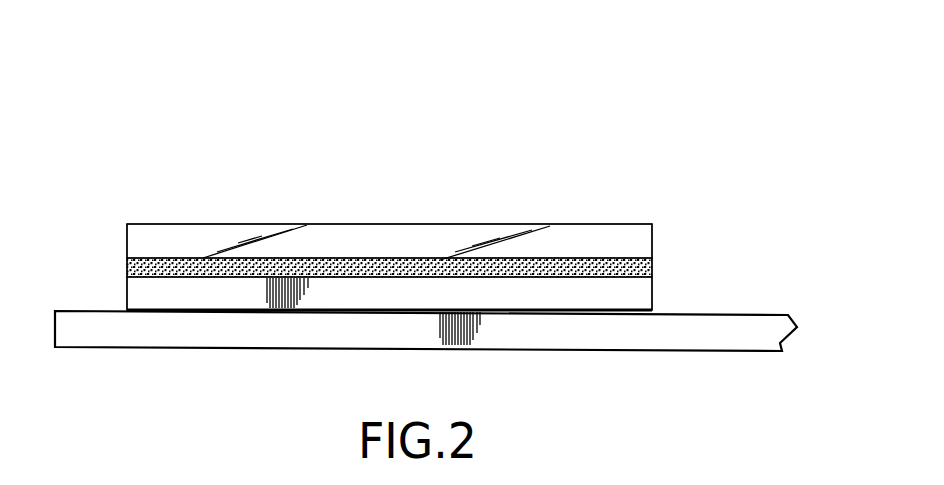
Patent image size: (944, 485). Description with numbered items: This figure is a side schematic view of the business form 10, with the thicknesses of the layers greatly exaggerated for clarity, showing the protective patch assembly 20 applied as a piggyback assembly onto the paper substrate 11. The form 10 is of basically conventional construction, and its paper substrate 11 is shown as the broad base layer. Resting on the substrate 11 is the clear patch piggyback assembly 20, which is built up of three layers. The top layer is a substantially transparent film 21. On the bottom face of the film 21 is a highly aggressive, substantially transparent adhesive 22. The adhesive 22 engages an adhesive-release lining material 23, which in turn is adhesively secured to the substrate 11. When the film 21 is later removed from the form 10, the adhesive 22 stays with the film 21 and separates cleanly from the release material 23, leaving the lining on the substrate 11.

The business form 10 is at (803, 290).
The paper substrate 11 is at (677, 328).
The protective patch assembly 20 is at (149, 167).
The substantially transparent film 21 is at (637, 243).
The substantially transparent adhesive 22 is at (130, 263).
The adhesive-release lining material 23 is at (150, 307).